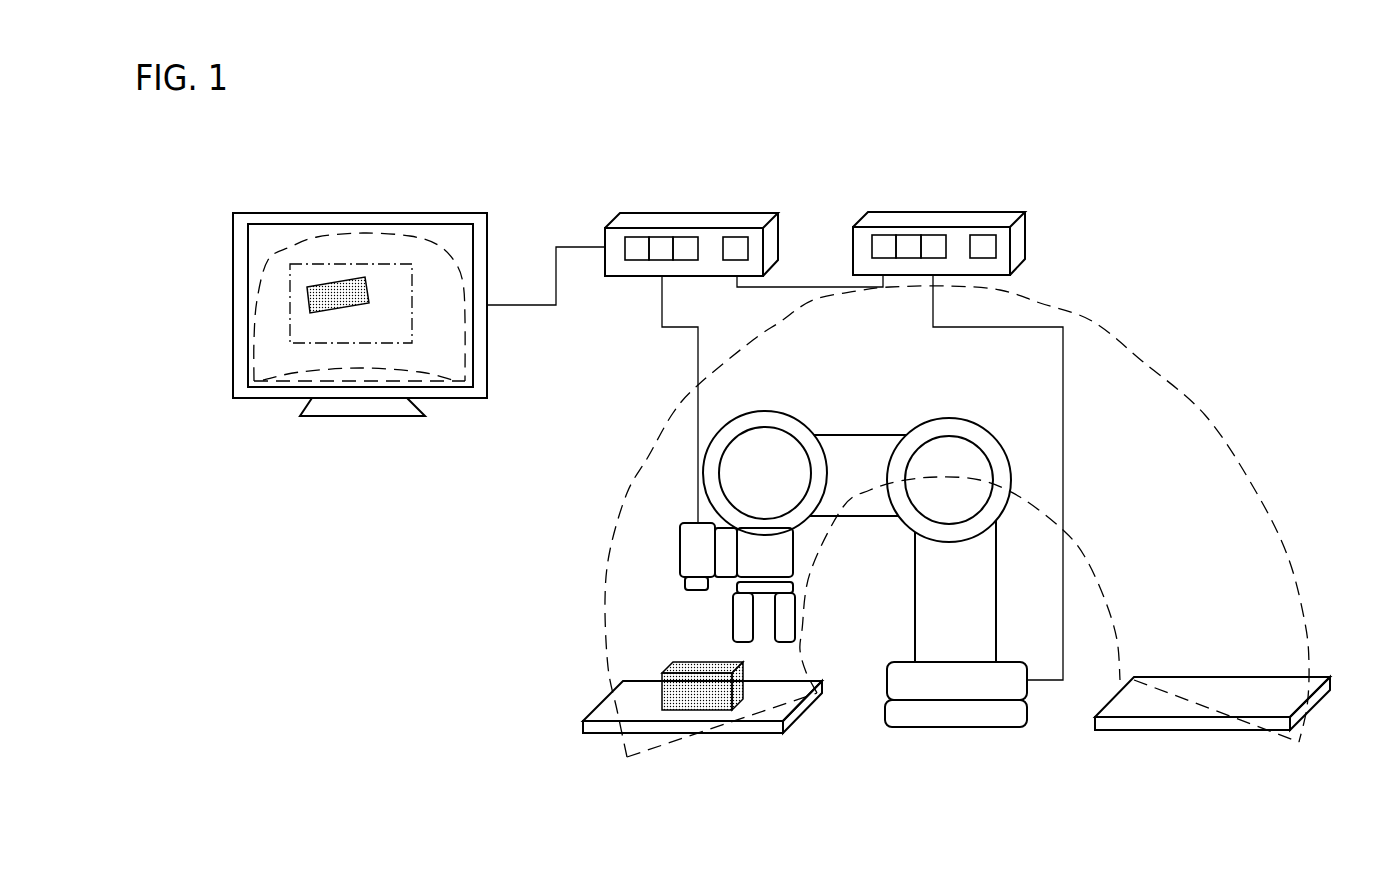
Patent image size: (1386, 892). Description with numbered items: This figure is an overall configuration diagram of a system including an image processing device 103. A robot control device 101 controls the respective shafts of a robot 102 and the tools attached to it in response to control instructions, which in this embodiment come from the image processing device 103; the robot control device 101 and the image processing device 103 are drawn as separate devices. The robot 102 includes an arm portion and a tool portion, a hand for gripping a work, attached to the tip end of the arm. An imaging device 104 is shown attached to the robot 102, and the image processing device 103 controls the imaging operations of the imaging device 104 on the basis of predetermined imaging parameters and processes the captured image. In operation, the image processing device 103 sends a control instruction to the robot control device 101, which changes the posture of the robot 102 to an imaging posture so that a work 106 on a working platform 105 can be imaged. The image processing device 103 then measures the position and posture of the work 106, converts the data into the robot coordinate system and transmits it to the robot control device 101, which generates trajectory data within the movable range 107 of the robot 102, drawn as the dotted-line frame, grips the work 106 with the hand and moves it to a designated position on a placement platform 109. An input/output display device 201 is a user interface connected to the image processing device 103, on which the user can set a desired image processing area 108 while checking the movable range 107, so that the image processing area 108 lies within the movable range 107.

The robot control device 101 is at (966, 212).
The robot 102 is at (987, 428).
The image processing device 103 is at (716, 212).
The imaging device 104 is at (679, 555).
The working platform 105 is at (744, 734).
The work 106 is at (336, 278).
The movable range 107 is at (268, 263).
The image processing area 108 is at (290, 306).
The placement platform 109 is at (1195, 732).
The input/output display device 201 is at (360, 417).